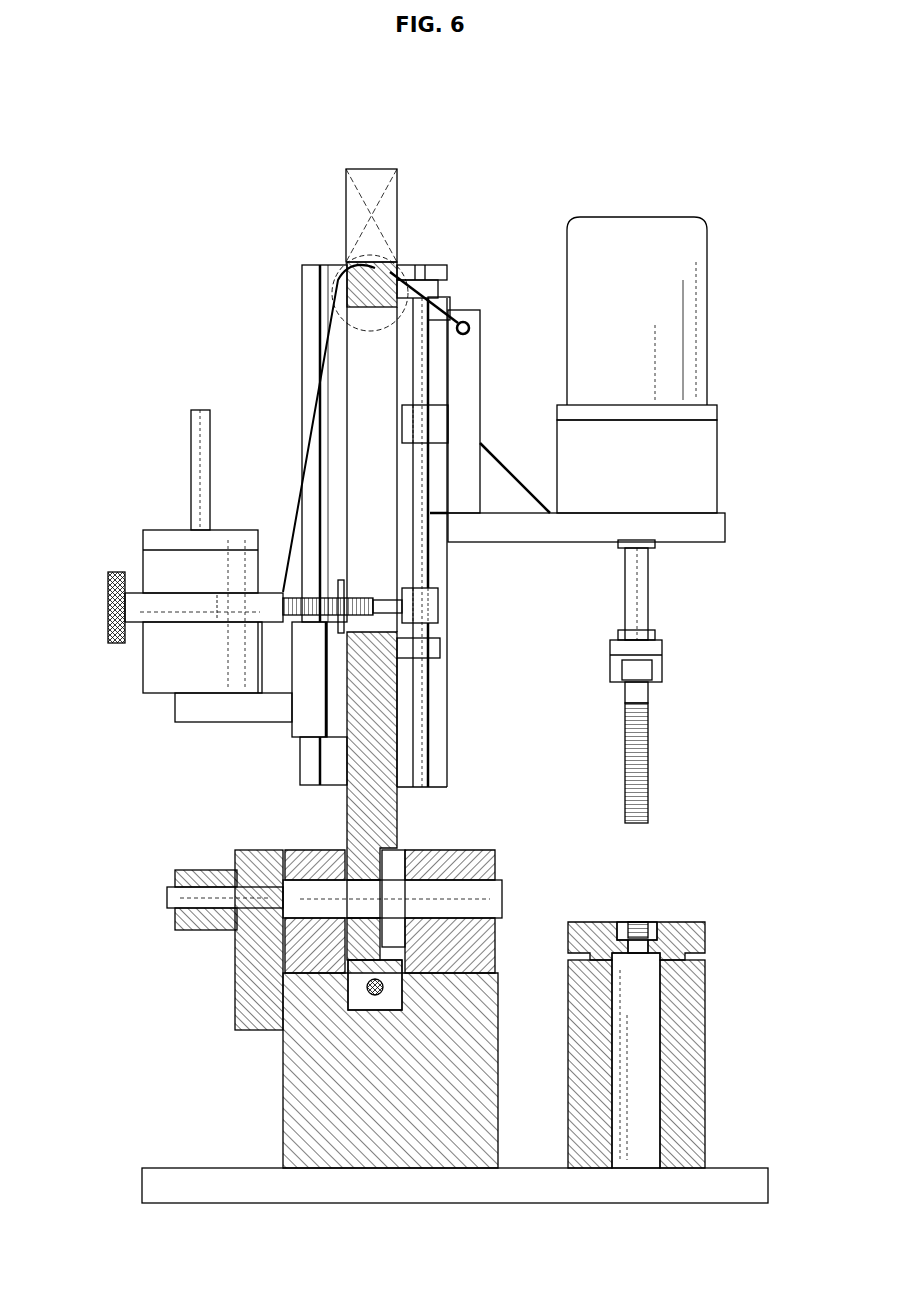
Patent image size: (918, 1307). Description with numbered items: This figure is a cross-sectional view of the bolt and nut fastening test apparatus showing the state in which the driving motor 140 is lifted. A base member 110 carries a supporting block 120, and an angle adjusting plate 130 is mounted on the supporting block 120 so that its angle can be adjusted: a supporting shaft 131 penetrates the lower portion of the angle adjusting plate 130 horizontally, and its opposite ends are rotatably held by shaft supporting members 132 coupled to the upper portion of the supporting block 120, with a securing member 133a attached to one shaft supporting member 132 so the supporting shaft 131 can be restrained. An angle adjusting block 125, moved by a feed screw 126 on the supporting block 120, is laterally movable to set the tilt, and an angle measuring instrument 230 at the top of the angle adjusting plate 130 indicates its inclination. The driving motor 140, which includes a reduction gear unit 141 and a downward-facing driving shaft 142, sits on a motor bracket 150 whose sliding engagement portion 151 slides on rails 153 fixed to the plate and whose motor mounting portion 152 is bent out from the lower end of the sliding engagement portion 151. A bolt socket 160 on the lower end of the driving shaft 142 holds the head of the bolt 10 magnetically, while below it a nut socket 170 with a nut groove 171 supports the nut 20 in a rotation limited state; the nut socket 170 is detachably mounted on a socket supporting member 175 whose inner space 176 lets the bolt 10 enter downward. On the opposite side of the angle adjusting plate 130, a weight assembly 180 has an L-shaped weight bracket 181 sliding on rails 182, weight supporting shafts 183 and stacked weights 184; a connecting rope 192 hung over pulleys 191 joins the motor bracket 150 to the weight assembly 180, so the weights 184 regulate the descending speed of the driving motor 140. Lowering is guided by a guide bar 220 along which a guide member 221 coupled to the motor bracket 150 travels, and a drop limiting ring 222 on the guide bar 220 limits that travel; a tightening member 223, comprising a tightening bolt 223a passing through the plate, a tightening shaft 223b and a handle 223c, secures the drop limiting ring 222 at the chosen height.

The bolt 10 is at (650, 740).
The nut 20 is at (640, 922).
The base member 110 is at (165, 1165).
The supporting block 120 is at (300, 1090).
The angle adjusting block 125 is at (383, 995).
The feed screw 126 is at (372, 1000).
The angle adjusting plate 130 is at (388, 725).
The supporting shaft 131 is at (497, 890).
The shaft supporting members 132 is at (308, 858).
The securing member 133a is at (205, 888).
The driving motor 140 is at (708, 228).
The reduction gear unit 141 is at (703, 470).
The driving shaft 142 is at (637, 595).
The motor bracket 150 is at (472, 318).
The sliding engagement portion 151 is at (480, 350).
The motor mounting portion 152 is at (712, 530).
The rails 153 is at (430, 265).
The bolt socket 160 is at (662, 650).
The nut socket 170 is at (700, 935).
The nut groove 171 is at (627, 922).
The socket supporting member 175 is at (698, 1060).
The space 176 is at (655, 1012).
The weight assembly 180 is at (148, 530).
The weight bracket 181 is at (200, 712).
The rails 182 is at (305, 280).
The weight supporting shafts 183 is at (195, 460).
The weights 184 is at (148, 565).
The pulleys 191 is at (338, 278).
The connecting rope 192 is at (302, 450).
The guide bar 220 is at (430, 558).
The guide member 221 is at (440, 410).
The drop limiting ring 222 is at (430, 605).
The tightening member 223 is at (190, 625).
The tightening bolt 223a is at (343, 580).
The tightening shaft 223b is at (217, 600).
The handle 223c is at (108, 620).
The angle measuring instrument 230 is at (378, 177).